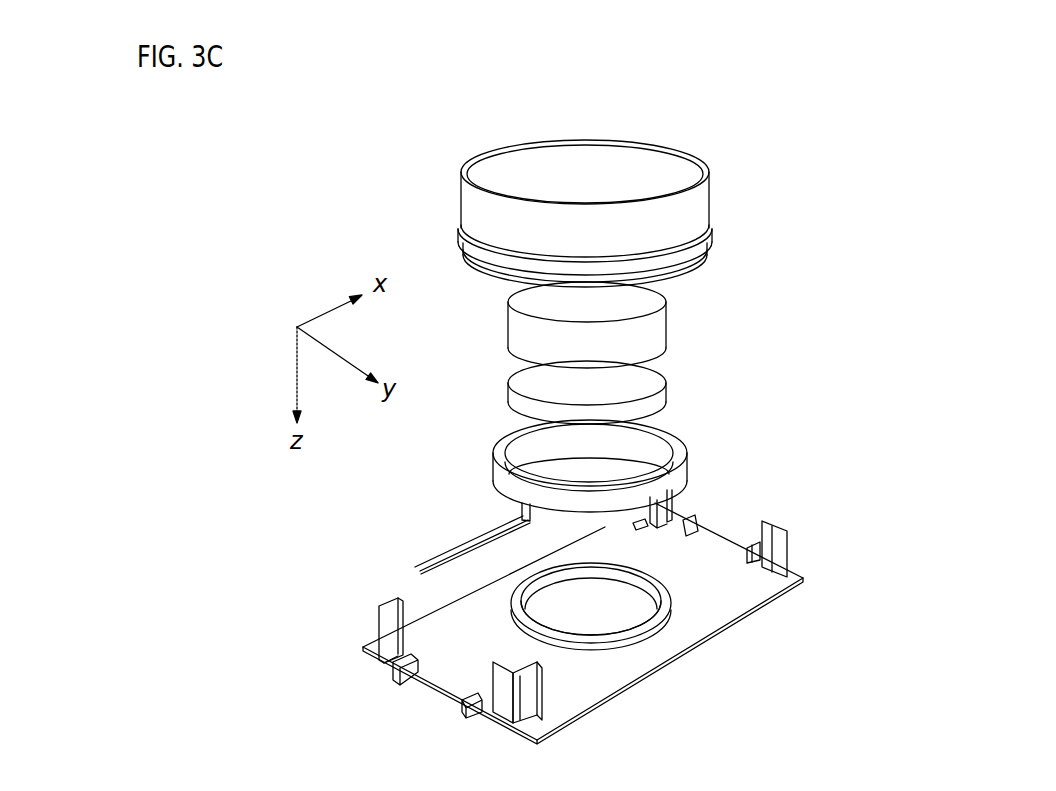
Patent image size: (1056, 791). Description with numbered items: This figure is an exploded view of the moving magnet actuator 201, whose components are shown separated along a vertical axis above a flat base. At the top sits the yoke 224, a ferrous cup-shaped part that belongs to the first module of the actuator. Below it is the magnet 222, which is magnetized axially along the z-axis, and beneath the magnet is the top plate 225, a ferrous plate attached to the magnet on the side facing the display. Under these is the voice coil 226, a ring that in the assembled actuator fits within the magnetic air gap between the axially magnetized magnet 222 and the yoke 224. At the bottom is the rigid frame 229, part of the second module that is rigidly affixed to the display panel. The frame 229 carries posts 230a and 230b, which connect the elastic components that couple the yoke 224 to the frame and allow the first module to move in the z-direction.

The moving magnet actuator 201 is at (957, 159).
The yoke 224 is at (697, 203).
The magnet 222 is at (642, 343).
The top plate 225 is at (657, 407).
The voice coil 226 is at (497, 482).
The rigid frame 229 is at (483, 651).
The post 230a is at (497, 697).
The post 230b is at (778, 555).